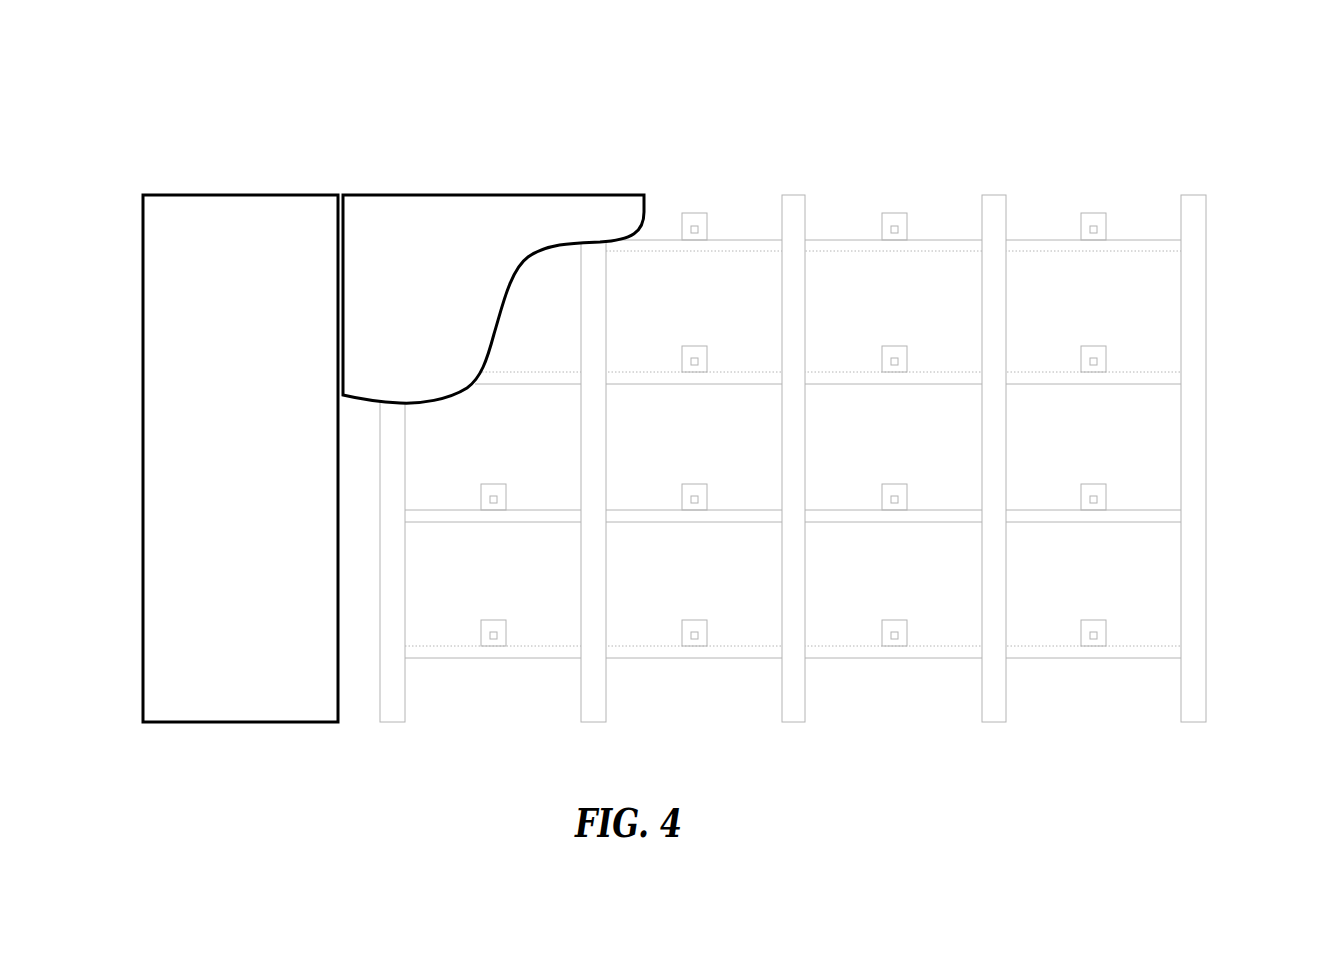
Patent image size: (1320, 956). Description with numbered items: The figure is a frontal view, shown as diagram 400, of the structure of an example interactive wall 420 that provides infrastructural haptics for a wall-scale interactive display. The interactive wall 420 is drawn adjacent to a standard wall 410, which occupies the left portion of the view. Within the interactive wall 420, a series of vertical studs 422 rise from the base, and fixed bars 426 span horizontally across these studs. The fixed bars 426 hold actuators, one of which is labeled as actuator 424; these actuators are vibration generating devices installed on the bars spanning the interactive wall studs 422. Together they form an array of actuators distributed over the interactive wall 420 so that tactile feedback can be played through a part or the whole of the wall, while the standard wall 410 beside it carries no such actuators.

The diagram 400 is at (1166, 58).
The standard wall 410 is at (239, 420).
The interactive wall 420 is at (435, 228).
The stud 422 is at (788, 186).
The actuator 424 is at (882, 194).
The fixed bars 426 is at (1157, 234).